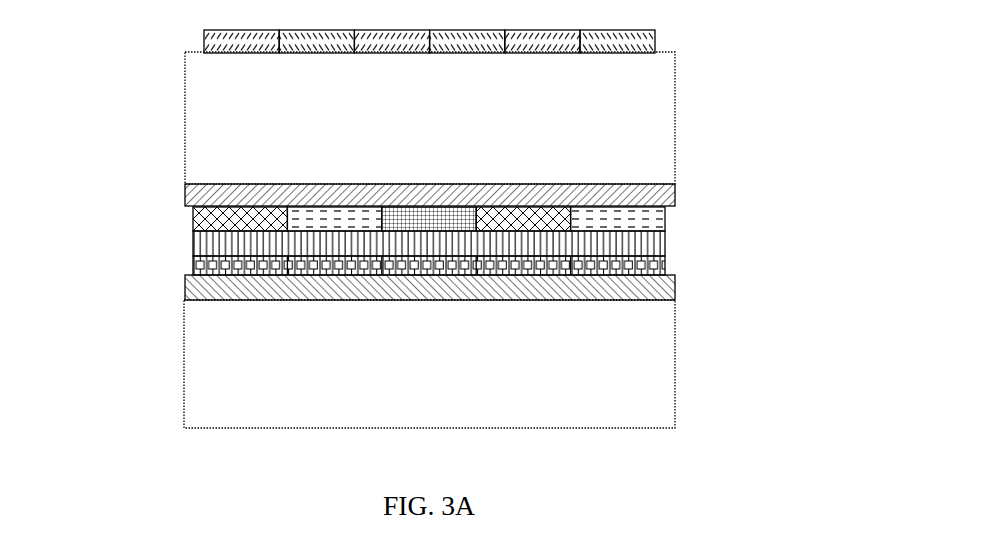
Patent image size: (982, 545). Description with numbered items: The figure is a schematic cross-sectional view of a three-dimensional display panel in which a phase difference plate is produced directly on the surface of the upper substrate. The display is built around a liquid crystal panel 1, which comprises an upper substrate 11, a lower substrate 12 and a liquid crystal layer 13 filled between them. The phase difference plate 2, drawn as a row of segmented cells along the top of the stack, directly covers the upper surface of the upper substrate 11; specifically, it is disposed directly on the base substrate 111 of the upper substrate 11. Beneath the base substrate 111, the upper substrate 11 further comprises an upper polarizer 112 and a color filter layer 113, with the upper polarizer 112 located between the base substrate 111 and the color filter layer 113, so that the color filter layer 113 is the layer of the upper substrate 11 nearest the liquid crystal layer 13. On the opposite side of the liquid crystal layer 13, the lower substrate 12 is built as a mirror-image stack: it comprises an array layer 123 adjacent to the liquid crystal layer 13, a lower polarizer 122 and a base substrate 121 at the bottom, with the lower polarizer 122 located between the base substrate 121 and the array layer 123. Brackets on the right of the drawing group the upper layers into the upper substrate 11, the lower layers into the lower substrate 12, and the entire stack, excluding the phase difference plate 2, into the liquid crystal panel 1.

The liquid crystal panel 1 is at (748, 87).
The phase difference plate 2 is at (628, 40).
The upper substrate 11 is at (677, 78).
The lower substrate 12 is at (673, 265).
The liquid crystal layer 13 is at (665, 243).
The base substrate 111 is at (205, 103).
The upper polarizer 112 is at (205, 190).
The color filter layer 113 is at (205, 217).
The base substrate 121 is at (205, 365).
The lower polarizer 122 is at (205, 293).
The array layer 123 is at (203, 265).